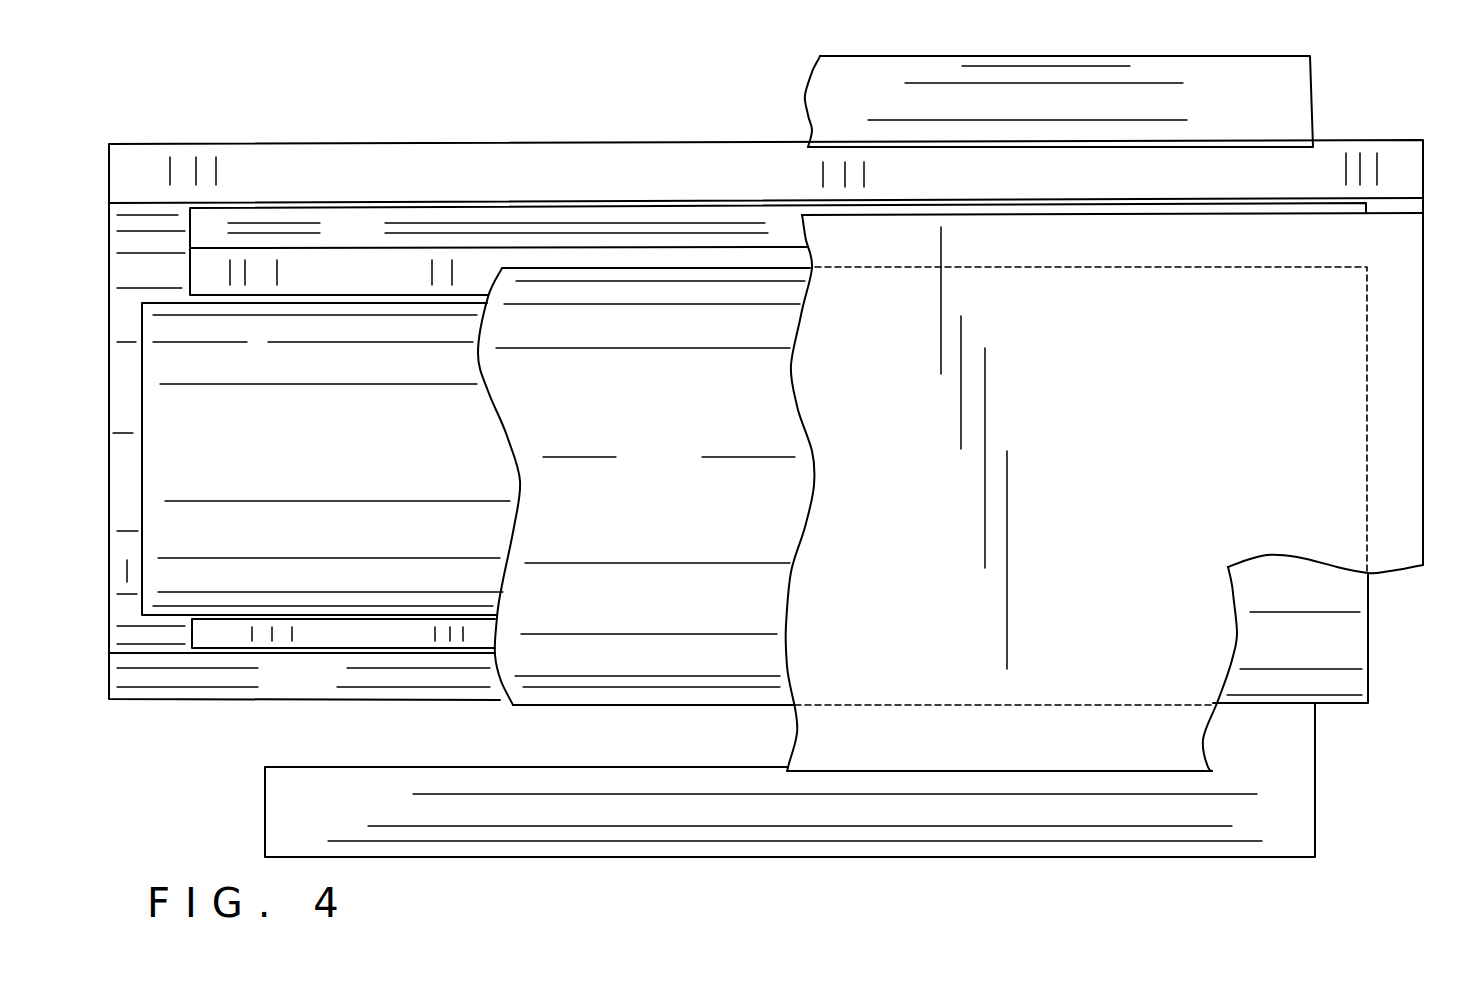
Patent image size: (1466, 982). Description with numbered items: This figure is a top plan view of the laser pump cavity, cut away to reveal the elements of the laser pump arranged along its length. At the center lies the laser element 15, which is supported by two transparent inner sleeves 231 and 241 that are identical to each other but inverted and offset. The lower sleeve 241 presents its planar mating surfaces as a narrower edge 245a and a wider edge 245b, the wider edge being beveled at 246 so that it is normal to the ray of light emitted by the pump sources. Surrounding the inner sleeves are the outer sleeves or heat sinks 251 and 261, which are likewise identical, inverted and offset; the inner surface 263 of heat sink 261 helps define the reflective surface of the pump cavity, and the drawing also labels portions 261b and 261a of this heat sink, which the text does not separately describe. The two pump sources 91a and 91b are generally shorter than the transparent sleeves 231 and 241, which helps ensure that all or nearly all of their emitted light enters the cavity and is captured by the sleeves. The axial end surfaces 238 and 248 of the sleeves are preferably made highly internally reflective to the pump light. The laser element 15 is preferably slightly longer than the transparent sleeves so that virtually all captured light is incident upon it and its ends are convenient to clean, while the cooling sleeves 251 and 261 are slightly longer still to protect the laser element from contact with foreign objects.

The heat sink 261 is at (268, 143).
The upper housing wall 261b is at (353, 185).
The lower housing wall 261a is at (325, 686).
The transparent inner sleeve 241 is at (415, 206).
The pump source 91b is at (1266, 92).
The pump source 91a is at (724, 803).
The beveled surface 246 is at (378, 238).
The wider edge 245b is at (375, 283).
The narrower edge 245a is at (330, 644).
The axial end surface 248 is at (190, 263).
The laser element 15 is at (333, 427).
The transparent inner sleeve 231 is at (637, 466).
The heat sink 251 is at (1200, 484).
The axial end surface 238 is at (1368, 621).
The inner surface 263 is at (127, 571).